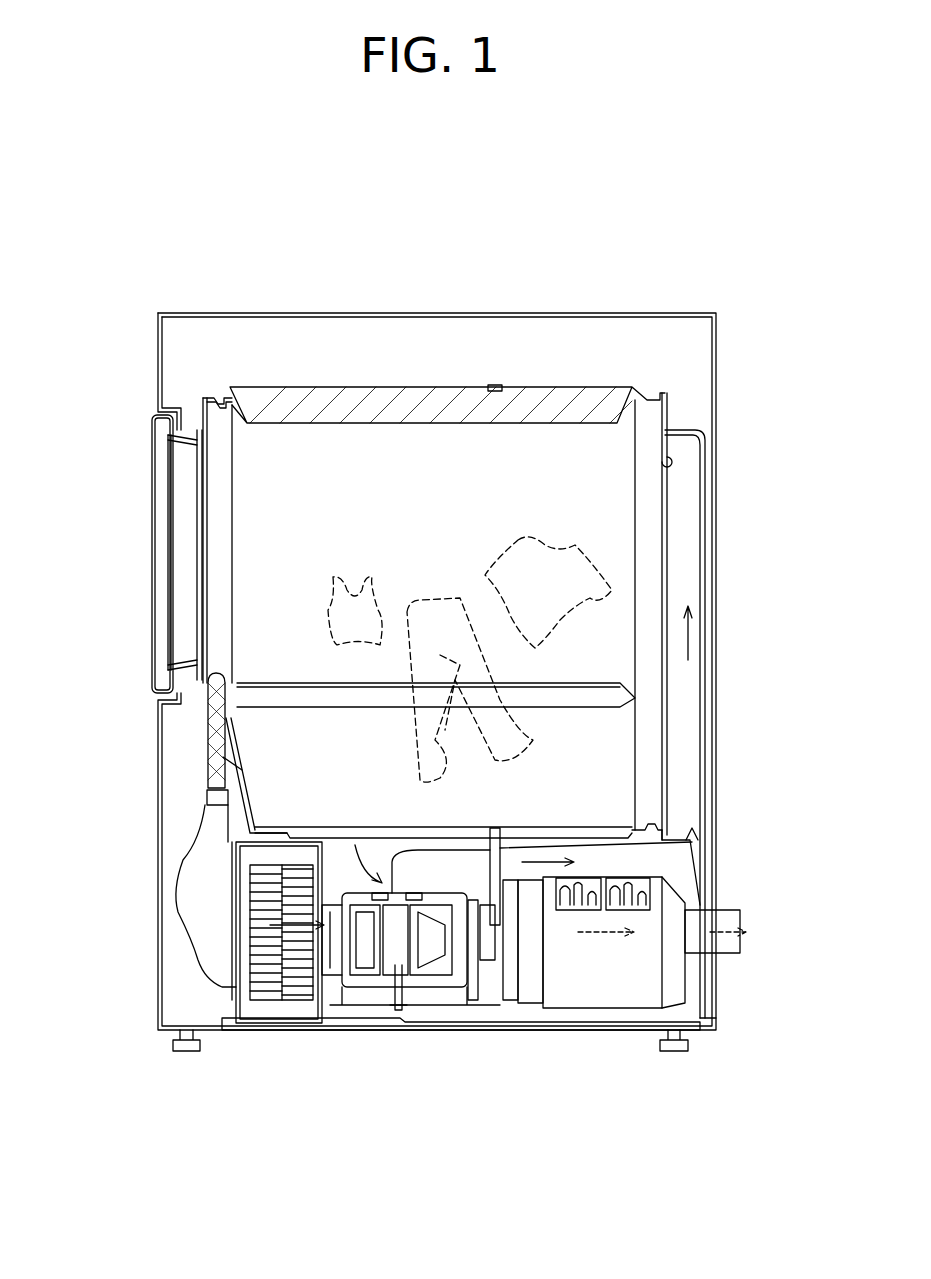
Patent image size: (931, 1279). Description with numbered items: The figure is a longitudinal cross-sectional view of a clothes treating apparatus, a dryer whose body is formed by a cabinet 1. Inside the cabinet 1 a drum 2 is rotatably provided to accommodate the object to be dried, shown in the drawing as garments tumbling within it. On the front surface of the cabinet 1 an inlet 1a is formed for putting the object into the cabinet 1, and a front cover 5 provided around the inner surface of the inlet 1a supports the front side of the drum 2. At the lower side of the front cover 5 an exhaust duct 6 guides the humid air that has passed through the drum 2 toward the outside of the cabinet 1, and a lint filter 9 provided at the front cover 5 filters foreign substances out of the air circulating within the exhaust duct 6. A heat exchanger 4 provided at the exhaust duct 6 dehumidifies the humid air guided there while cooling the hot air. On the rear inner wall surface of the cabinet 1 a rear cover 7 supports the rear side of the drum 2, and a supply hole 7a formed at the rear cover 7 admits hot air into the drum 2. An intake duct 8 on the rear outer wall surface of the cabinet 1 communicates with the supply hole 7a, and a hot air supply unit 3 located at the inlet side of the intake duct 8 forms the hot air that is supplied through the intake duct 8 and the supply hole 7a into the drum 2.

The cabinet 1 is at (280, 312).
The inlet 1a is at (178, 440).
The drum 2 is at (342, 402).
The hot air supply unit 3 is at (662, 860).
The heat exchanger 4 is at (583, 995).
The front cover 5 is at (203, 403).
The exhaust duct 6 is at (200, 845).
The rear cover 7 is at (667, 412).
The supply hole 7a is at (667, 465).
The intake duct 8 is at (690, 517).
The lint filter 9 is at (210, 738).